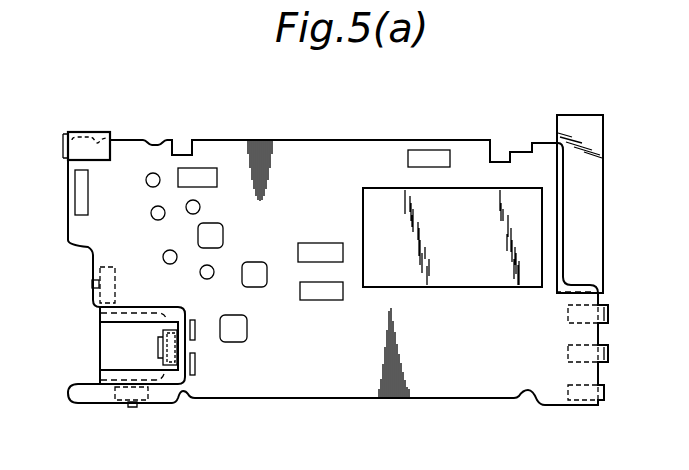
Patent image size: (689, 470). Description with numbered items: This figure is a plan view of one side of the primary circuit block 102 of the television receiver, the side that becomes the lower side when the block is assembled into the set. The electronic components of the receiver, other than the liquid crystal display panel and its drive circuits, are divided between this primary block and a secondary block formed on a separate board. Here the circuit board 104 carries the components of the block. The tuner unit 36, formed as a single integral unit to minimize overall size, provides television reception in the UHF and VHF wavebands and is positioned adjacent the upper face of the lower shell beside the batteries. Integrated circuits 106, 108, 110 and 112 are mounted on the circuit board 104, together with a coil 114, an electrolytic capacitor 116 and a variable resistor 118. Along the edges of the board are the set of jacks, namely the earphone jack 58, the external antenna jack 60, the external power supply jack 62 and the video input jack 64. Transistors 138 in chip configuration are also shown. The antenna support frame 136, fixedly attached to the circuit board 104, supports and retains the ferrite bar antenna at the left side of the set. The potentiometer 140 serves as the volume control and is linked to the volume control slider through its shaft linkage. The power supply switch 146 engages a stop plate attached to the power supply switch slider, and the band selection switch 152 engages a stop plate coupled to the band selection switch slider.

The tuner unit 36 is at (457, 272).
The earphone jack 58 is at (62, 137).
The external antenna jack 60 is at (608, 312).
The external power supply jack 62 is at (605, 393).
The video input jack 64 is at (608, 352).
The primary circuit block 102 is at (408, 136).
The circuit board 104 is at (320, 160).
The integrated circuit 106 is at (443, 158).
The integrated circuit 108 is at (204, 177).
The integrated circuit 110 is at (325, 300).
The integrated circuit 112 is at (320, 255).
The coil 114 is at (232, 342).
The electrolytic capacitor 116 is at (153, 173).
The variable resistor 118 is at (196, 355).
The antenna support frame 136 is at (592, 207).
The transistors 138 is at (163, 338).
The potentiometer 140 is at (78, 198).
The power supply switch 146 is at (92, 278).
The band selection switch 152 is at (122, 403).